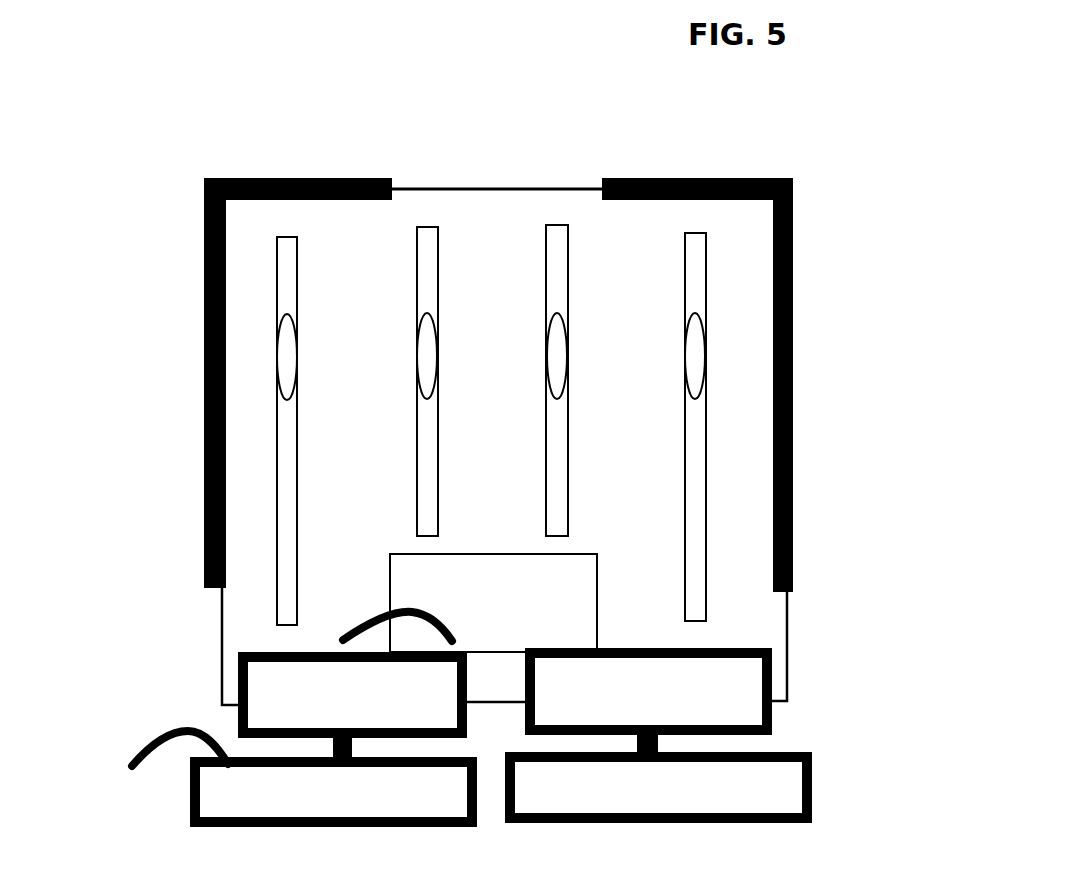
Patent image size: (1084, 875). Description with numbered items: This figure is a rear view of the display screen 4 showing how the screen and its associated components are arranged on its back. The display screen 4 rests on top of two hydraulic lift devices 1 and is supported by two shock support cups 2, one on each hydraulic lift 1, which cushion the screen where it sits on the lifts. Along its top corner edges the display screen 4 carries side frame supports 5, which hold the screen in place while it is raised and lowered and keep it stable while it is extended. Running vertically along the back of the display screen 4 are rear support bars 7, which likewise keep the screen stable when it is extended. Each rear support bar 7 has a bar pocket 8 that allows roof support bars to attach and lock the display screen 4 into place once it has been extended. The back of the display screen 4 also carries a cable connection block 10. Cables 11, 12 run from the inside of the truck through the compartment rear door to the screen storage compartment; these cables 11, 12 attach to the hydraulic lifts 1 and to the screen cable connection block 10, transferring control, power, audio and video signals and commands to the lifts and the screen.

The hydraulic lift device 1 is at (230, 801).
The shock support cup 2 is at (309, 693).
The display screen 4 is at (247, 529).
The side frame support 5 is at (192, 221).
The rear support bar 7 is at (264, 307).
The bar pocket 8 is at (275, 364).
The cable connection block 10 is at (415, 597).
The cable 11 is at (330, 636).
The cable 12 is at (135, 748).